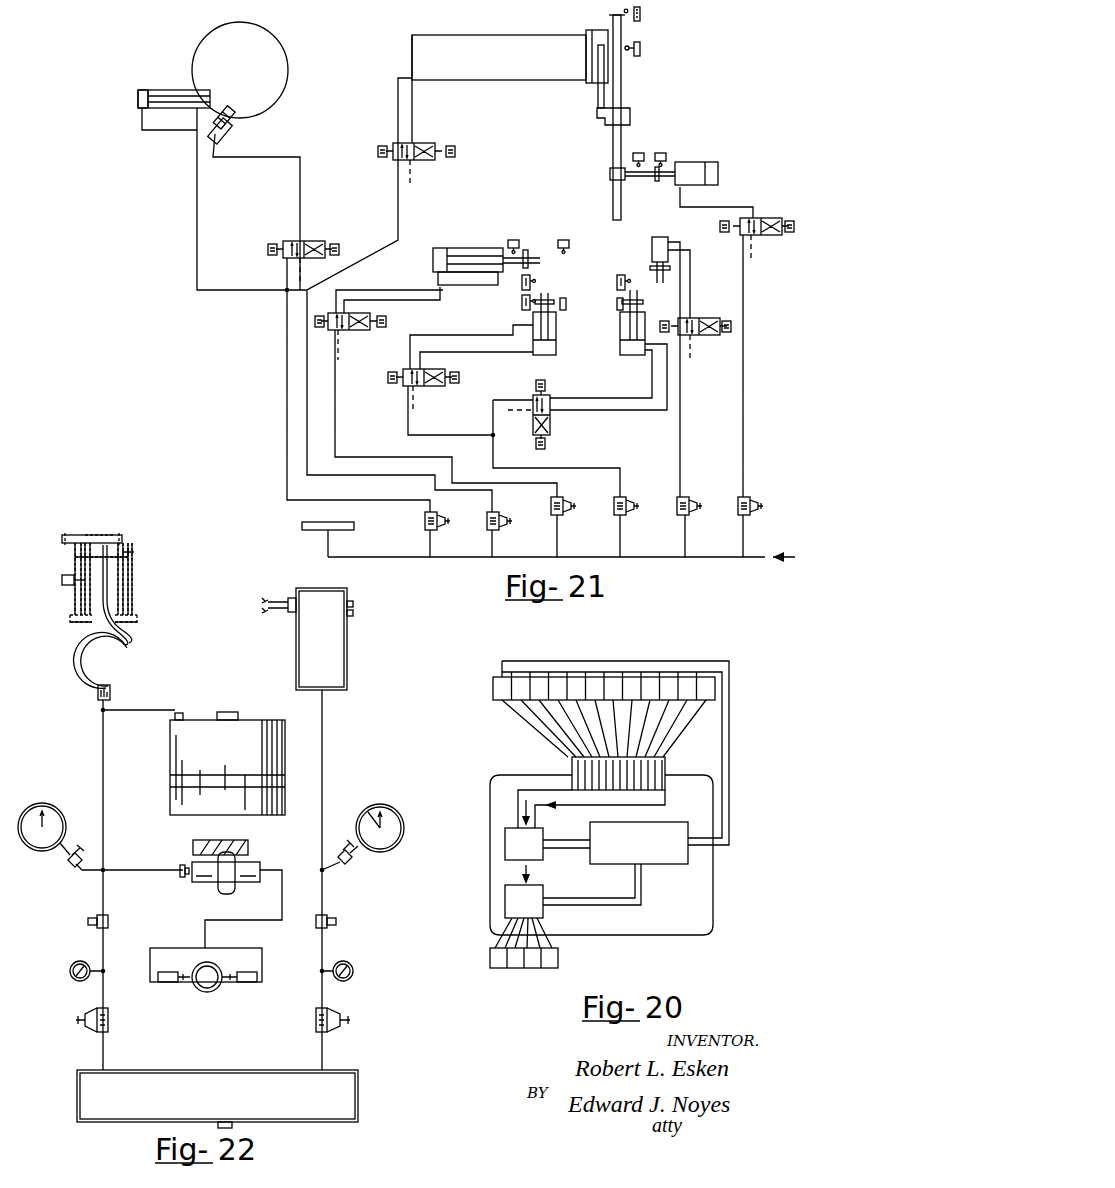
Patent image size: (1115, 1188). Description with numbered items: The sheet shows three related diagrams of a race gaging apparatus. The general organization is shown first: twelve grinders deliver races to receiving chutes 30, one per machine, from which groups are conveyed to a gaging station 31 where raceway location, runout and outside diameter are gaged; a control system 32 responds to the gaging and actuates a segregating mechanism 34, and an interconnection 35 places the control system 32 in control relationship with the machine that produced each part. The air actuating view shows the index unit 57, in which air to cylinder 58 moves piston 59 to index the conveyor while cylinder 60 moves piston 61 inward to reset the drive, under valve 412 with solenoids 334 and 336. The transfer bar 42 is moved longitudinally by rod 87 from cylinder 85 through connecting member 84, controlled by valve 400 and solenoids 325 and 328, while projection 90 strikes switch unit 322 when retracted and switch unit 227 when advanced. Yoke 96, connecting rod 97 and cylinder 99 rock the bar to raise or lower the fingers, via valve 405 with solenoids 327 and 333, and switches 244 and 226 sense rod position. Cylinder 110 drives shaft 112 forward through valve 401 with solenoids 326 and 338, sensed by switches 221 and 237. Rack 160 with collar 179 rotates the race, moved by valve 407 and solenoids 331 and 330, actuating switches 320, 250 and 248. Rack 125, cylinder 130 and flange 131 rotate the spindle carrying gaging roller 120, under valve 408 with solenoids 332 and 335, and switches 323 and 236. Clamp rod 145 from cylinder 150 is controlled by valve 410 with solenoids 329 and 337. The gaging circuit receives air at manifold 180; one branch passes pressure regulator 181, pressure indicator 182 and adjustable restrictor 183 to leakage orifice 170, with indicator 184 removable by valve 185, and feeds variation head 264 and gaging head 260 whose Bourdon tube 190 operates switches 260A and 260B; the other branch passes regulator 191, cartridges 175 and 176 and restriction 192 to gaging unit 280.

In FIG. 21, the index unit 57 is at (288, 74).
In FIG. 21, the cylinder 58 is at (160, 88).
In FIG. 21, the piston 59 is at (142, 90).
In FIG. 21, the cylinder 60 is at (232, 134).
In FIG. 21, the piston 61 is at (238, 120).
In FIG. 21, the cylinder 85 is at (584, 60).
In FIG. 21, the rod 87 is at (597, 95).
In FIG. 21, the transfer bar 42 is at (612, 148).
In FIG. 21, the projection 90 is at (623, 13).
In FIG. 21, the switch unit 322 is at (641, 14).
In FIG. 21, the switch unit 227 is at (641, 51).
In FIG. 21, the connecting member 84 is at (628, 113).
In FIG. 21, the switch 226 is at (638, 153).
In FIG. 21, the switch 244 is at (663, 153).
In FIG. 21, the cylinder 99 is at (700, 162).
In FIG. 21, the yoke 96 is at (609, 176).
In FIG. 21, the connecting rod 97 is at (644, 180).
In FIG. 21, the valve 405 is at (760, 236).
In FIG. 21, the solenoid 327 is at (790, 220).
In FIG. 21, the solenoid 333 is at (721, 233).
In FIG. 21, the cylinder 150 is at (653, 243).
In FIG. 21, the piston rod 145 is at (650, 267).
In FIG. 21, the cylinder 110 is at (456, 248).
In FIG. 21, the shaft 112 is at (527, 250).
In FIG. 21, the switch 221 is at (513, 240).
In FIG. 21, the switch 237 is at (564, 240).
In FIG. 21, the switch 320 is at (521, 286).
In FIG. 21, the switch 248 is at (521, 303).
In FIG. 21, the collar 179 is at (533, 322).
In FIG. 21, the switch 250 is at (562, 311).
In FIG. 21, the rack 160 is at (552, 296).
In FIG. 21, the switch 323 is at (616, 303).
In FIG. 21, the switch 236 is at (617, 281).
In FIG. 21, the rack 125 is at (633, 290).
In FIG. 21, the cylinder 130 is at (621, 346).
In FIG. 21, the flange 131 is at (638, 306).
In FIG. 21, the valve 410 is at (701, 320).
In FIG. 21, the solenoid 329 is at (666, 333).
In FIG. 21, the solenoid 337 is at (731, 329).
In FIG. 21, the valve 401 is at (352, 331).
In FIG. 21, the solenoid 326 is at (315, 323).
In FIG. 21, the solenoid 338 is at (382, 328).
In FIG. 21, the valve 407 is at (433, 369).
In FIG. 21, the solenoid 330 is at (392, 384).
In FIG. 21, the solenoid 331 is at (455, 384).
In FIG. 21, the valve 408 is at (551, 420).
In FIG. 21, the solenoid 332 is at (546, 384).
In FIG. 21, the solenoid 335 is at (546, 446).
In FIG. 21, the valve 400 is at (418, 143).
In FIG. 21, the solenoid 325 is at (450, 150).
In FIG. 21, the solenoid 328 is at (382, 158).
In FIG. 21, the valve 412 is at (303, 241).
In FIG. 21, the solenoid 336 is at (272, 244).
In FIG. 21, the solenoid 334 is at (337, 244).
In FIG. 21, the manifold 180 is at (305, 527).
In FIG. 22, the manifold 180 is at (338, 1100).
In FIG. 22, the gaging head 260 is at (115, 525).
In FIG. 22, the switch 260A is at (72, 548).
In FIG. 22, the switch 260B is at (132, 545).
In FIG. 22, the Bourdon tube 190 is at (73, 660).
In FIG. 22, the variation head 264 is at (205, 730).
In FIG. 22, the gaging unit 280 is at (338, 644).
In FIG. 22, the pressure indicator 184 is at (26, 808).
In FIG. 22, the valve 185 is at (68, 866).
In FIG. 22, the leakage orifice 170 is at (181, 878).
In FIG. 22, the gaging roller 120 is at (258, 865).
In FIG. 22, the adjustable restrictor 183 is at (108, 919).
In FIG. 22, the pressure indicator 182 is at (70, 977).
In FIG. 22, the pressure regulator 181 is at (108, 1022).
In FIG. 22, the cartridge 175 is at (166, 983).
In FIG. 22, the cartridge 176 is at (252, 983).
In FIG. 22, the variable restriction 192 is at (328, 918).
In FIG. 22, the regulator 191 is at (330, 1012).
In FIG. 20, the interconnection 35 is at (730, 722).
In FIG. 20, the receiving chutes 30 is at (566, 765).
In FIG. 20, the gaging station 31 is at (512, 845).
In FIG. 20, the control system 32 is at (670, 865).
In FIG. 20, the segregating mechanism 34 is at (512, 902).